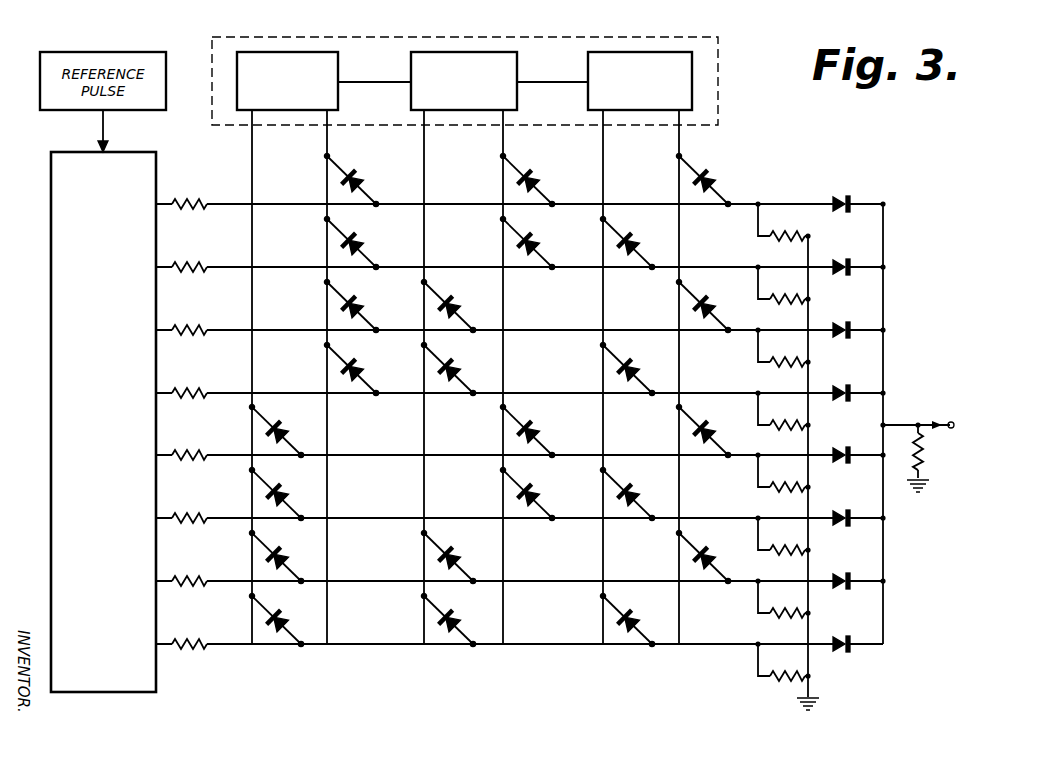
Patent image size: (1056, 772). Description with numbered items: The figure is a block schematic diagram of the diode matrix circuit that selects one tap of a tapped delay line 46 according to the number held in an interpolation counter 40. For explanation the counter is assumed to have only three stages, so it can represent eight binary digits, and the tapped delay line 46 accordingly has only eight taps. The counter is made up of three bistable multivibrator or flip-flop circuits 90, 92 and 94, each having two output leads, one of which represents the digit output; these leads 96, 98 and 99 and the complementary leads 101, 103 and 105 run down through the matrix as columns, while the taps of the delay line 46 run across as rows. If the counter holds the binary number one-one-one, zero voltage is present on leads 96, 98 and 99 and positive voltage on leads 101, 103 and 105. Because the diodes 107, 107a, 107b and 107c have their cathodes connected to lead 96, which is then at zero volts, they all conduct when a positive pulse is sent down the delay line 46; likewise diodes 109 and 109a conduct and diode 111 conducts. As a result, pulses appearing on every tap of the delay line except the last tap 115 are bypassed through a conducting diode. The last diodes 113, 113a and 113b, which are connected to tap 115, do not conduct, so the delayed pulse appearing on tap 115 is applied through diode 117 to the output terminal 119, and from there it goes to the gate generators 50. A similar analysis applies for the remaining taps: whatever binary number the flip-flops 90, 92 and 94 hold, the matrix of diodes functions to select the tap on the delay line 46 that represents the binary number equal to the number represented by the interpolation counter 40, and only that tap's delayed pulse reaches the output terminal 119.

The flip-flop counter 40 is at (598, 37).
The tapped delay line 46 is at (51, 268).
The gate generators 50 is at (1010, 429).
The flip-flop circuit 90 is at (340, 66).
The flip-flop circuit 92 is at (518, 66).
The flip-flop circuit 94 is at (691, 52).
The lead 96 is at (328, 133).
The lead 98 is at (504, 133).
The lead 99 is at (680, 133).
The lead 101 is at (253, 191).
The lead 103 is at (425, 191).
The lead 105 is at (604, 191).
The diode 107 is at (360, 179).
The diode 107a is at (360, 242).
The diode 107b is at (360, 305).
The diode 107c is at (360, 368).
The diode 109 is at (538, 428).
The diode 109a is at (538, 491).
The diode 111 is at (710, 558).
The diode 113 is at (300, 606).
The diode 113a is at (458, 615).
The diode 113b is at (634, 615).
The last tap 115 is at (241, 647).
The diode 117 is at (836, 636).
The output terminal 119 is at (949, 421).